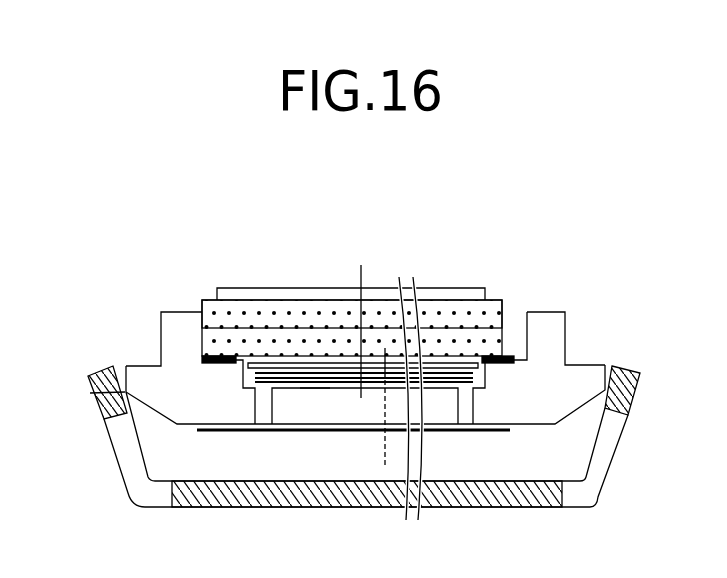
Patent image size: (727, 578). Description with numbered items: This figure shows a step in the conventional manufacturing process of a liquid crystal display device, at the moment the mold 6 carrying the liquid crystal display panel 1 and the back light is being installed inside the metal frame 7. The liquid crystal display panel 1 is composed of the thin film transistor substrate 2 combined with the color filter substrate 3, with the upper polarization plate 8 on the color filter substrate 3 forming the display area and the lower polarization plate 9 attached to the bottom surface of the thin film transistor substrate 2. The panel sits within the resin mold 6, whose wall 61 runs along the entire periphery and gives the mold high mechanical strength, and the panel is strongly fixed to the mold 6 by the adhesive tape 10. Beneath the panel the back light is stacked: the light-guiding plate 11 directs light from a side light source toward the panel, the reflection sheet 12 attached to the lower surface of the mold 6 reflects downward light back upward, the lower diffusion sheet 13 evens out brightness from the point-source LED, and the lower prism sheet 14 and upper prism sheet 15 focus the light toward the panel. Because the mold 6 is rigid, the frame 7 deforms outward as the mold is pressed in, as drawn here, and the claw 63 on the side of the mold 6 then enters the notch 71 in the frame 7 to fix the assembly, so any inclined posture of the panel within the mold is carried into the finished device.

The liquid crystal display panel 1 is at (380, 272).
The thin film transistor substrate 2 is at (300, 330).
The color filter substrate 3 is at (270, 312).
The mold 6 is at (170, 408).
The frame 7 is at (90, 393).
The upper polarization plate 8 is at (252, 293).
The lower polarization plate 9 is at (330, 365).
The adhesive tape 10 is at (512, 352).
The light-guiding plate 11 is at (284, 410).
The reflection sheet 12 is at (237, 433).
The lower diffusion sheet 13 is at (315, 388).
The lower prism sheet 14 is at (352, 380).
The upper prism sheet 15 is at (384, 445).
The wall 61 is at (178, 327).
The claw 63 is at (126, 365).
The notch 71 is at (608, 442).